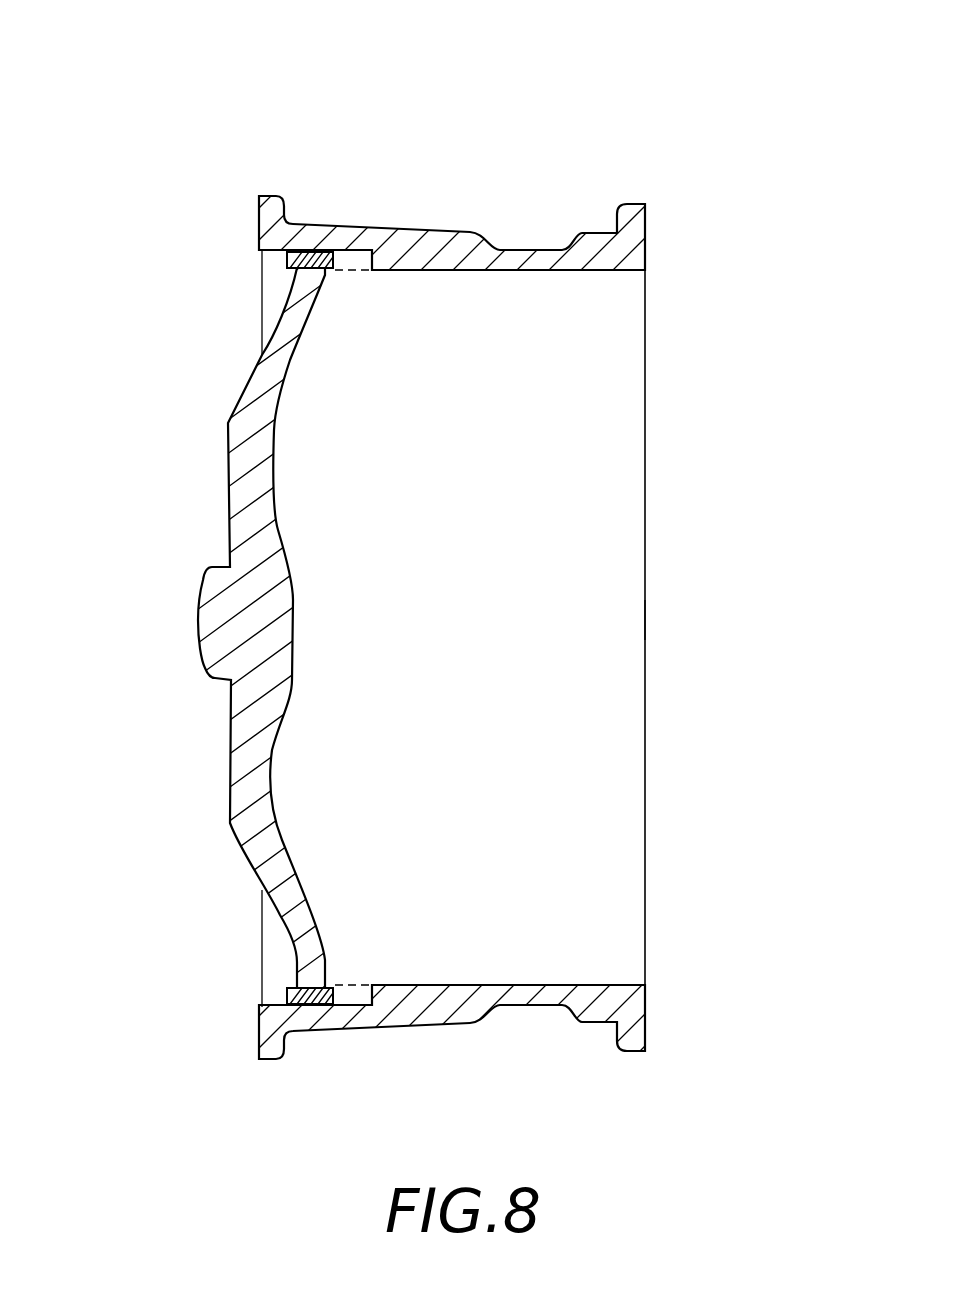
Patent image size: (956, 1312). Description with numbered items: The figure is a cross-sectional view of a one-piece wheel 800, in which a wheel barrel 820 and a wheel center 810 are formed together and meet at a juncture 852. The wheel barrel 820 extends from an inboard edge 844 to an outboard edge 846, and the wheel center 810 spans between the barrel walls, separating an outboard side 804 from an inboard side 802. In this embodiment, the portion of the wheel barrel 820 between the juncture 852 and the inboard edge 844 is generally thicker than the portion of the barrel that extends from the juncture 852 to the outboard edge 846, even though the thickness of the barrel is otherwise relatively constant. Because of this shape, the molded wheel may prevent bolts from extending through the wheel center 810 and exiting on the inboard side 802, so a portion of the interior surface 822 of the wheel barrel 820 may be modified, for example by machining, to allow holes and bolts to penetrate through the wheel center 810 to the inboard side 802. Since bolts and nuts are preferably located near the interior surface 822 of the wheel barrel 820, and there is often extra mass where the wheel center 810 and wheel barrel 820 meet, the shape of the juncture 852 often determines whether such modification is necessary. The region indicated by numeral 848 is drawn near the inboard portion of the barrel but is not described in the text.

The one-piece wheel 800 is at (276, 102).
The wheel barrel 820 is at (371, 158).
The interior surface 822 is at (416, 288).
The inboard edge 844 is at (648, 340).
The outboard edge 846 is at (261, 322).
The wheel center 810 is at (212, 738).
The outboard side 804 is at (125, 620).
The inboard side 802 is at (725, 620).
The juncture 852 is at (311, 1020).
The drop well 848 is at (543, 1024).